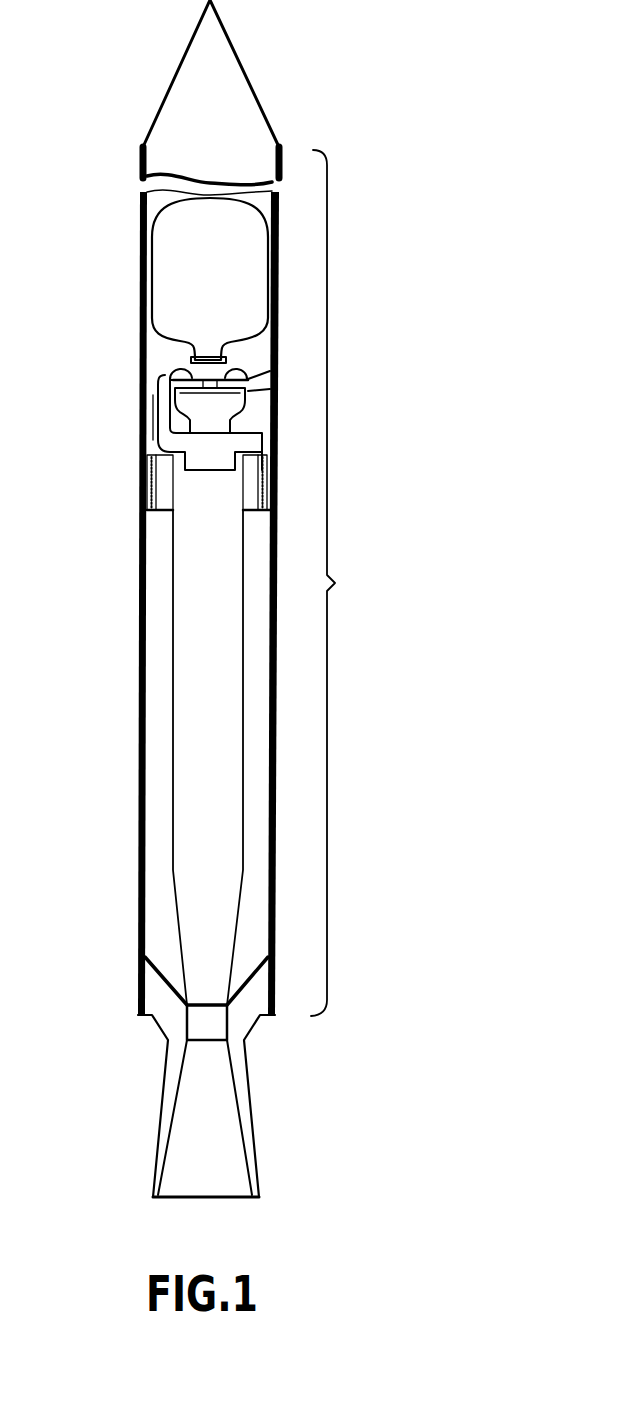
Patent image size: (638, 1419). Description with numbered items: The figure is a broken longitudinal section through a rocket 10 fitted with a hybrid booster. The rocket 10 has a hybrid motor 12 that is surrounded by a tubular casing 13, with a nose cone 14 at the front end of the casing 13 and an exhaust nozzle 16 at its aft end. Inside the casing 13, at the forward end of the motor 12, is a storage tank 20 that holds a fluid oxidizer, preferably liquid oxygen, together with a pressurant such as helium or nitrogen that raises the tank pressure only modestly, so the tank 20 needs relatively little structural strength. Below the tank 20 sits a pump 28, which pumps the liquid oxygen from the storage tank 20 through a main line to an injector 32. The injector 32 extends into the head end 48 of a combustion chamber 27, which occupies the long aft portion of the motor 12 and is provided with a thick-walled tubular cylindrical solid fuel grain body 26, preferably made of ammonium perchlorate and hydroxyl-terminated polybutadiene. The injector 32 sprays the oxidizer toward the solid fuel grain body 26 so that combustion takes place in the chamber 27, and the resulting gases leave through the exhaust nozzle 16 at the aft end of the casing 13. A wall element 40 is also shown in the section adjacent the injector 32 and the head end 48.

The rocket 10 is at (318, 106).
The hybrid motor 12 is at (343, 583).
The tubular casing 13 is at (139, 786).
The nose cone 14 is at (232, 58).
The exhaust nozzle 16 is at (261, 1094).
The storage tank 20 is at (161, 277).
The solid fuel grain body 26 is at (146, 680).
The combustion chamber 27 is at (186, 635).
The pump 28 is at (176, 366).
The injector 32 is at (160, 480).
The bulkhead wall 40 is at (150, 455).
The head end 48 is at (211, 490).